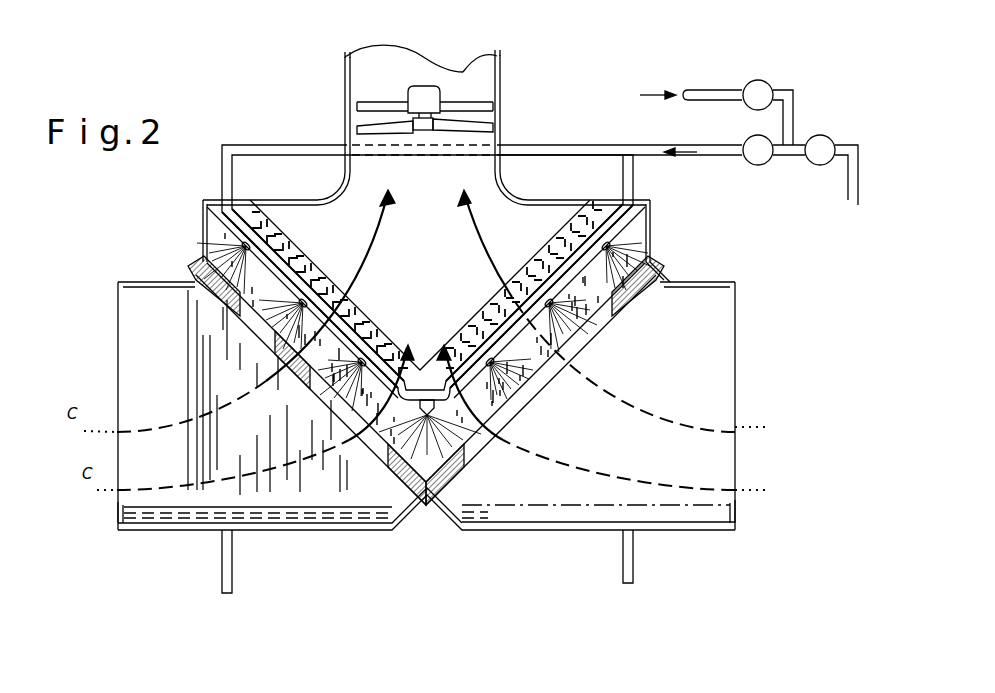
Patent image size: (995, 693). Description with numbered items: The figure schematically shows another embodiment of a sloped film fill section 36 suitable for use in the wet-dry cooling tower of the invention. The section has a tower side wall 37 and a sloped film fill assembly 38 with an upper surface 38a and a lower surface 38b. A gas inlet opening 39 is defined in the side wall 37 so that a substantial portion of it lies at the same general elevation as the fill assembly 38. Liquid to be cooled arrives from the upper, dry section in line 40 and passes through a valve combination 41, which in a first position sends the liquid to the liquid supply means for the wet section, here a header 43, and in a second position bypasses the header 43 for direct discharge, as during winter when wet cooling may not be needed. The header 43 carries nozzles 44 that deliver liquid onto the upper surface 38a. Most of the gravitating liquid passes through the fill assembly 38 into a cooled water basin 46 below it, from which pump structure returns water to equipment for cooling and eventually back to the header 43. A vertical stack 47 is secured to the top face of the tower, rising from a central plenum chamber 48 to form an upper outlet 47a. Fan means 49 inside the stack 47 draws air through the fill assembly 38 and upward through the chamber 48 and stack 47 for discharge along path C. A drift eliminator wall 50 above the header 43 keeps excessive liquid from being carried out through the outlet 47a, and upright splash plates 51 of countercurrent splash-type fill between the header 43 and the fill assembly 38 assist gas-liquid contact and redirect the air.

The sloped film fill section 36 is at (308, 124).
The side wall 37 is at (116, 284).
The sloped film fill assembly 38 is at (199, 266).
The upper surface 38a is at (432, 497).
The lower surface 38b is at (395, 529).
The gas inlet opening 39 is at (113, 356).
The line 40 is at (712, 90).
The valve combination 41 is at (809, 118).
The header 43 is at (297, 281).
The nozzles 44 is at (308, 305).
The cooled water basin 46 is at (210, 528).
The vertical stack 47 is at (488, 92).
The upper outlet 47a is at (463, 72).
The central plenum chamber 48 is at (438, 237).
The fan means 49 is at (402, 125).
The drift eliminator wall 50 is at (395, 348).
The splash plates 51 is at (272, 302).